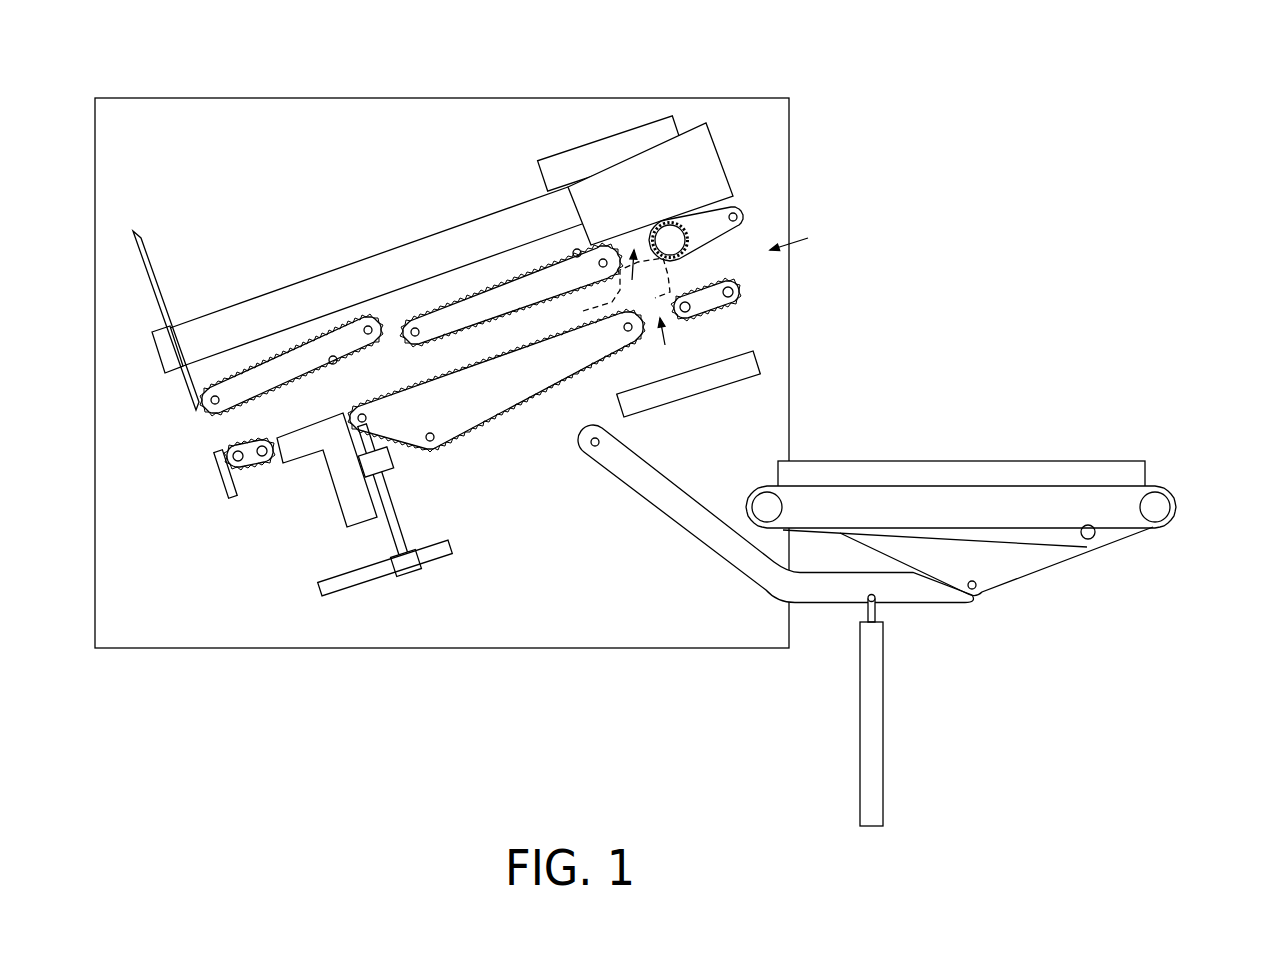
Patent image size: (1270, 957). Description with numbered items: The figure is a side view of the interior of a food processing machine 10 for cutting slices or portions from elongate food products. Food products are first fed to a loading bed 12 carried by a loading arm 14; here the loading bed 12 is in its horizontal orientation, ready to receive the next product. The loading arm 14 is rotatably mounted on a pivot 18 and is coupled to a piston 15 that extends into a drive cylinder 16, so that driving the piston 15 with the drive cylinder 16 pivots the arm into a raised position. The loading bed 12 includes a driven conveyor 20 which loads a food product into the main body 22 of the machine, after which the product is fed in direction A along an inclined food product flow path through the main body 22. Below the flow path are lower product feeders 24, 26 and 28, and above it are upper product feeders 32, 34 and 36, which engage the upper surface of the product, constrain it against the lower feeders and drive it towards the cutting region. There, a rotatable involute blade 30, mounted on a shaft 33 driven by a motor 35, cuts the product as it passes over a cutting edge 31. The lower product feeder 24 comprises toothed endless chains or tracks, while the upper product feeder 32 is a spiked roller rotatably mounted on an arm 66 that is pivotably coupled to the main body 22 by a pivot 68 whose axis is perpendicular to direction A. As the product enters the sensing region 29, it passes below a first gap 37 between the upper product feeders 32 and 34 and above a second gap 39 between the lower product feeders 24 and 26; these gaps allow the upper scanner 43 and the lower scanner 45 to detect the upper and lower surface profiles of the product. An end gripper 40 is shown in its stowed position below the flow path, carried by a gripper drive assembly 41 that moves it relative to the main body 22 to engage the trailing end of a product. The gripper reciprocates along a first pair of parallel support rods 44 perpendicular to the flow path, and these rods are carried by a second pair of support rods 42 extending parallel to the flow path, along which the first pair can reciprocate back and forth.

The food processing machine 10 is at (878, 142).
The loading bed 12 is at (1187, 497).
The loading arm 14 is at (737, 563).
The piston 15 is at (877, 612).
The drive cylinder 16 is at (873, 705).
The pivot 18 is at (595, 447).
The driven conveyor 20 is at (1133, 537).
The main body 22 is at (594, 97).
The lower product feeder 24 is at (716, 301).
The lower product feeder 26 is at (592, 347).
The lower product feeder 28 is at (260, 461).
The sensing region 29 is at (612, 291).
The rotatable involute blade 30 is at (153, 280).
The cutting edge 31 is at (214, 472).
The upper product feeder 32 is at (676, 250).
The shaft 33 is at (403, 262).
The upper product feeder 34 is at (548, 272).
The motor 35 is at (717, 173).
The upper product feeder 36 is at (355, 345).
The first gap 37 is at (643, 278).
The second gap 39 is at (670, 345).
The end gripper 40 is at (347, 502).
The gripper drive assembly 41 is at (422, 518).
The second pair of support rods 42 is at (368, 577).
The upper scanner 43 is at (666, 125).
The first pair of parallel support rods 44 is at (388, 502).
The lower scanner 45 is at (753, 370).
The arm 66 is at (727, 223).
The pivot 68 is at (743, 218).
The in-feed direction A is at (800, 236).